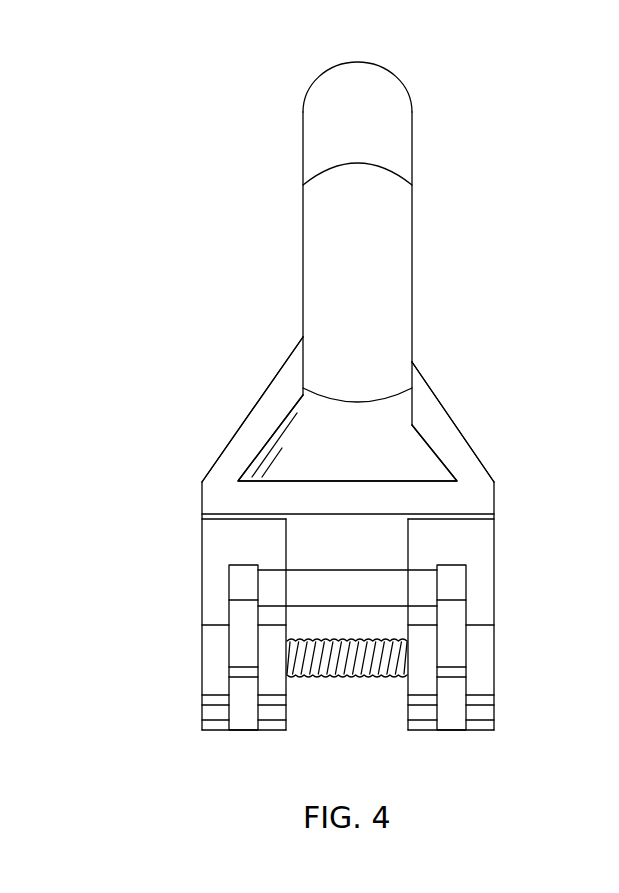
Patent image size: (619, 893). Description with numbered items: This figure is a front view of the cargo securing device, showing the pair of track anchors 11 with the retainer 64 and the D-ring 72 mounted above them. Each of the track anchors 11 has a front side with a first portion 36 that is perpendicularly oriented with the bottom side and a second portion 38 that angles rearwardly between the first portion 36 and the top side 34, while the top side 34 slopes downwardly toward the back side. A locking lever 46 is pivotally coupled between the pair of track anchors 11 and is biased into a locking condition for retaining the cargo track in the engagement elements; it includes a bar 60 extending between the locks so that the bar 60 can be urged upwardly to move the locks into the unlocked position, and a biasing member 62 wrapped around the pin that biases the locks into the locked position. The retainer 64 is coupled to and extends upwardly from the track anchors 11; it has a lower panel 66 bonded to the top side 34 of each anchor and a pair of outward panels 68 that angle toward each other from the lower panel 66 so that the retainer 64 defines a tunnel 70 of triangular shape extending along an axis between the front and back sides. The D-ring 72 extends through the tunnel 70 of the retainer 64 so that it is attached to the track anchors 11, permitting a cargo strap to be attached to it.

The D-ring 72 is at (435, 123).
The retainer 64 is at (271, 353).
The outward panels 68 is at (262, 393).
The tunnel 70 is at (431, 462).
The track anchors 11 is at (202, 601).
The top side 34 is at (238, 514).
The second portion 38 is at (222, 550).
The lower panel 66 is at (419, 516).
The first portion 36 is at (214, 680).
The locking lever 46 is at (466, 542).
The bar 60 is at (375, 592).
The biasing member 62 is at (308, 675).